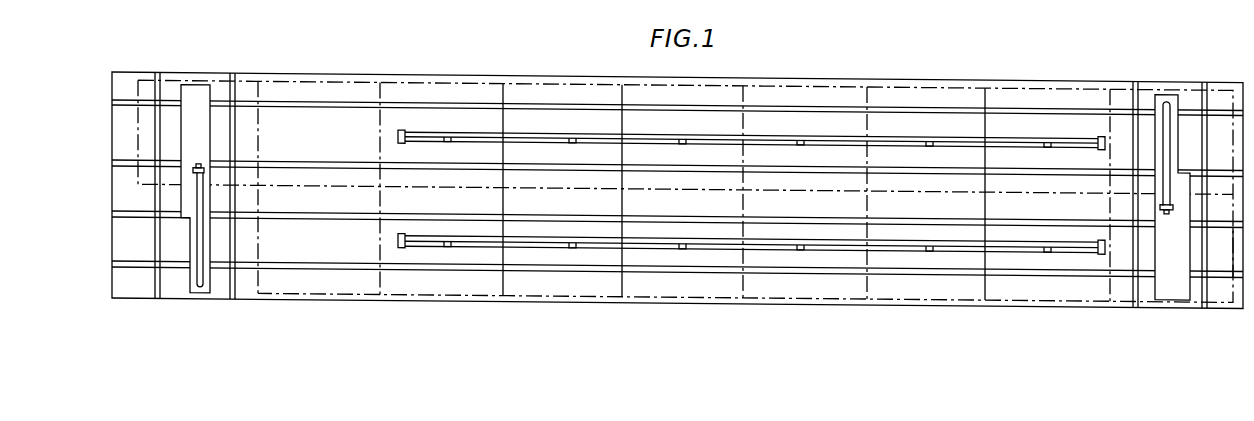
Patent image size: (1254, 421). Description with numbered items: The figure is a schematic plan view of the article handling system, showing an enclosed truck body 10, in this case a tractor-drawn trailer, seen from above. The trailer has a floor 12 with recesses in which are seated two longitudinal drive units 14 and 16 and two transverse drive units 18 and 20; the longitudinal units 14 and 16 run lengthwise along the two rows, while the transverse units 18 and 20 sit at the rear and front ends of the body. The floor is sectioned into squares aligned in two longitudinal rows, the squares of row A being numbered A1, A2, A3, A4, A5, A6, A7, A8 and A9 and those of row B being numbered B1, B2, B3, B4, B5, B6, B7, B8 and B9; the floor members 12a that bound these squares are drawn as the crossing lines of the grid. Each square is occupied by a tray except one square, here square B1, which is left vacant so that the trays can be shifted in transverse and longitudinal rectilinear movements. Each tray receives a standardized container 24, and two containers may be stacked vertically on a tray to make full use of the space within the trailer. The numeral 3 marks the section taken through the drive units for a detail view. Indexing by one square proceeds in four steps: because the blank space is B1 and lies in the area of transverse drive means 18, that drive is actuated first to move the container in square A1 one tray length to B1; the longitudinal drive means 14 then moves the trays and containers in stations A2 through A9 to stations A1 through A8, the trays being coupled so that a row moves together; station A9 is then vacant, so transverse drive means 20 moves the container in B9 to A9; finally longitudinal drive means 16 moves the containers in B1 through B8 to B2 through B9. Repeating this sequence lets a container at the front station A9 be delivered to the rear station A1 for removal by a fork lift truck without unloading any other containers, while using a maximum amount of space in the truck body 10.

The enclosed truck body 10 is at (391, 70).
The floor 12 is at (519, 70).
The frame members 12a is at (553, 106).
The longitudinal drive unit 14 is at (697, 128).
The longitudinal drive unit 16 is at (690, 232).
The transverse drive unit 18 is at (197, 106).
The transverse drive unit 20 is at (1173, 256).
The standardized container 24 is at (137, 130).
The section line for FIG. 3 is at (180, 222).
The square A1 is at (148, 110).
The square A2 is at (312, 123).
The square A3 is at (448, 112).
The square A4 is at (573, 112).
The square A5 is at (683, 100).
The square A6 is at (796, 115).
The square A7 is at (932, 112).
The square A8 is at (1048, 110).
The square A9 is at (1150, 130).
The square B1 is at (178, 270).
The square B2 is at (310, 265).
The square B3 is at (448, 265).
The square B4 is at (568, 265).
The square B5 is at (688, 265).
The square B6 is at (798, 265).
The square B7 is at (925, 265).
The square B8 is at (1048, 265).
The square B9 is at (1218, 275).